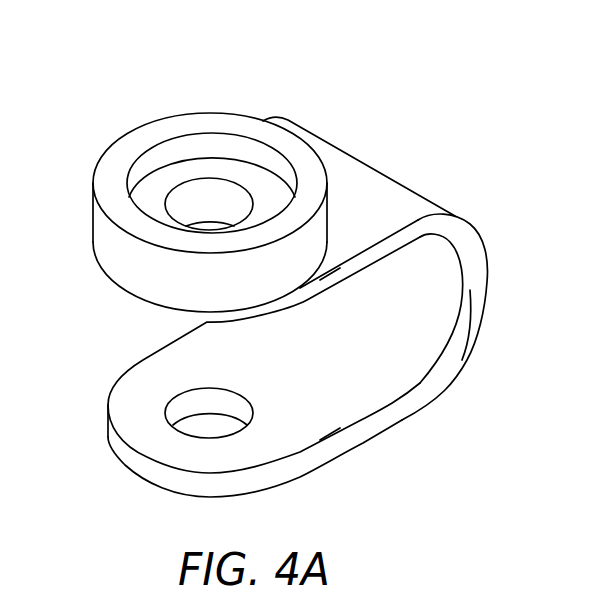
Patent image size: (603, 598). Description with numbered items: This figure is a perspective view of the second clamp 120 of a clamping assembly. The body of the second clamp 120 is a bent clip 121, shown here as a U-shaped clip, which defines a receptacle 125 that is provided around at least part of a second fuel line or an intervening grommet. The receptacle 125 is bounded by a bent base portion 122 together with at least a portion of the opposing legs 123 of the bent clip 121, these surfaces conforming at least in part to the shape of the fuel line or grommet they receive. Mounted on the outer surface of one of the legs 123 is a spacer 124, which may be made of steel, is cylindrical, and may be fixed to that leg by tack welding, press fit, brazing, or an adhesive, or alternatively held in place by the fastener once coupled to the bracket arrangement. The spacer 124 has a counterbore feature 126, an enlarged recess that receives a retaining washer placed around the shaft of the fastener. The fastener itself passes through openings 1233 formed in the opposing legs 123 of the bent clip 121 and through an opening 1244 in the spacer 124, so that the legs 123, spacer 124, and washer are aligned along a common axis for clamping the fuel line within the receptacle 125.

The second clamp 120 is at (438, 99).
The bent clip 121 is at (484, 332).
The bent base portion 122 is at (442, 296).
The opposing legs 123 is at (343, 247).
The spacer 124 is at (100, 247).
The receptacle 125 is at (142, 380).
The counterbore feature 126 is at (140, 193).
The openings 1233 is at (186, 429).
The opening 1244 is at (208, 182).